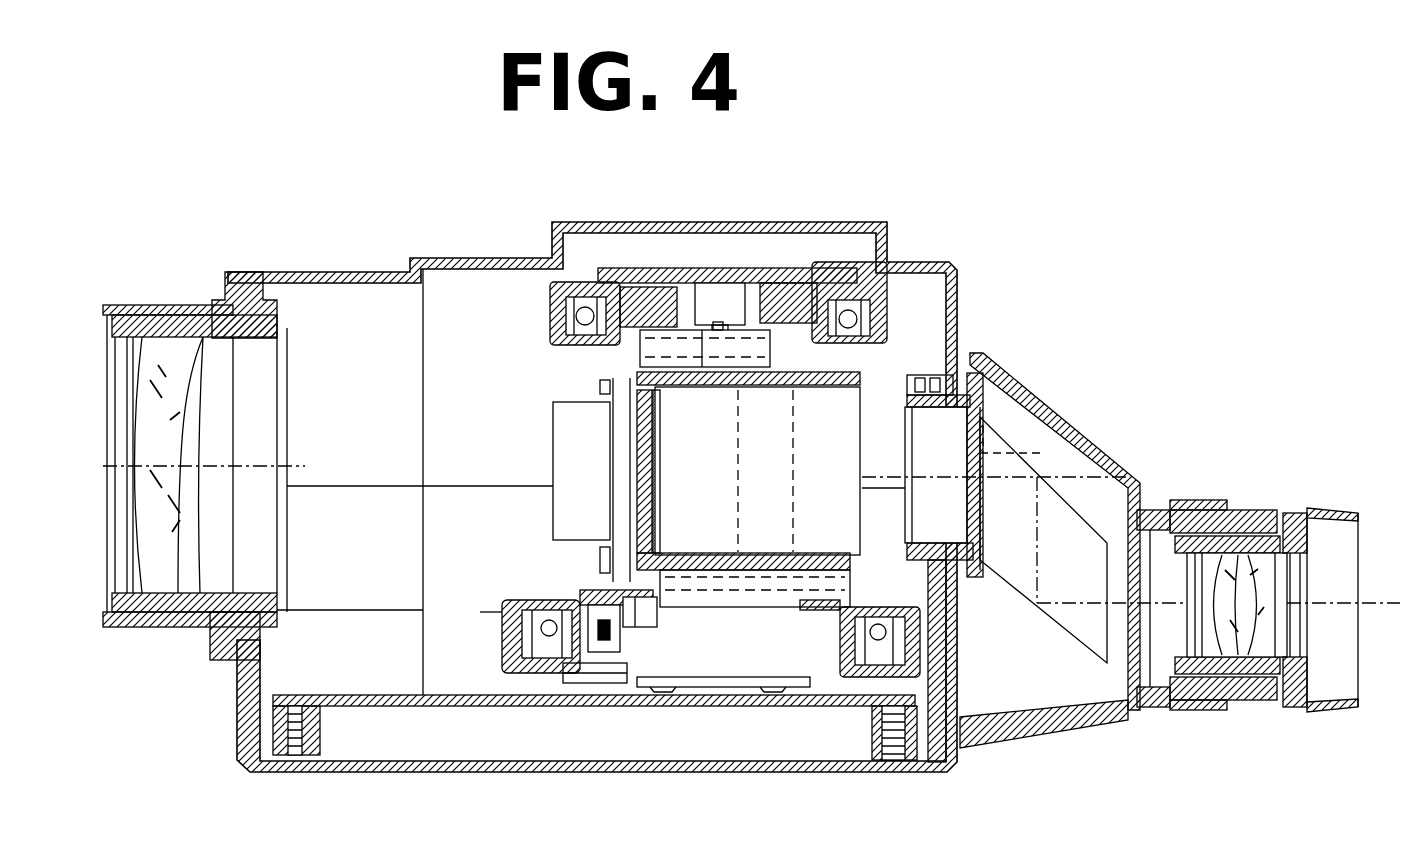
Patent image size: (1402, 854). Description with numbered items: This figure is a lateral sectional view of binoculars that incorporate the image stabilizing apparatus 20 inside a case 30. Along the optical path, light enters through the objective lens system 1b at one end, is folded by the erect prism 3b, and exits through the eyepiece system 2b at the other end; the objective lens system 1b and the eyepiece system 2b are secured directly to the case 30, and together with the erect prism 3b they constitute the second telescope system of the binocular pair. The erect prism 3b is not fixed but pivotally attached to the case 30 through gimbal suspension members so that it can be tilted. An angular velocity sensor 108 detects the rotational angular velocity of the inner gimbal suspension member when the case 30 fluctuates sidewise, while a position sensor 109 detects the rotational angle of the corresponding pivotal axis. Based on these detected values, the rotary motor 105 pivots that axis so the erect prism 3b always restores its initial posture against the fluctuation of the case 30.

The objective lens system 1b is at (151, 295).
The case 30 is at (455, 257).
The rotary motor 105 is at (717, 295).
The image stabilizing apparatus 20 is at (903, 314).
The erect prism 3b is at (843, 422).
The angular velocity sensor 108 is at (563, 417).
The position sensor 109 is at (620, 647).
The eyepiece system 2b is at (1244, 495).